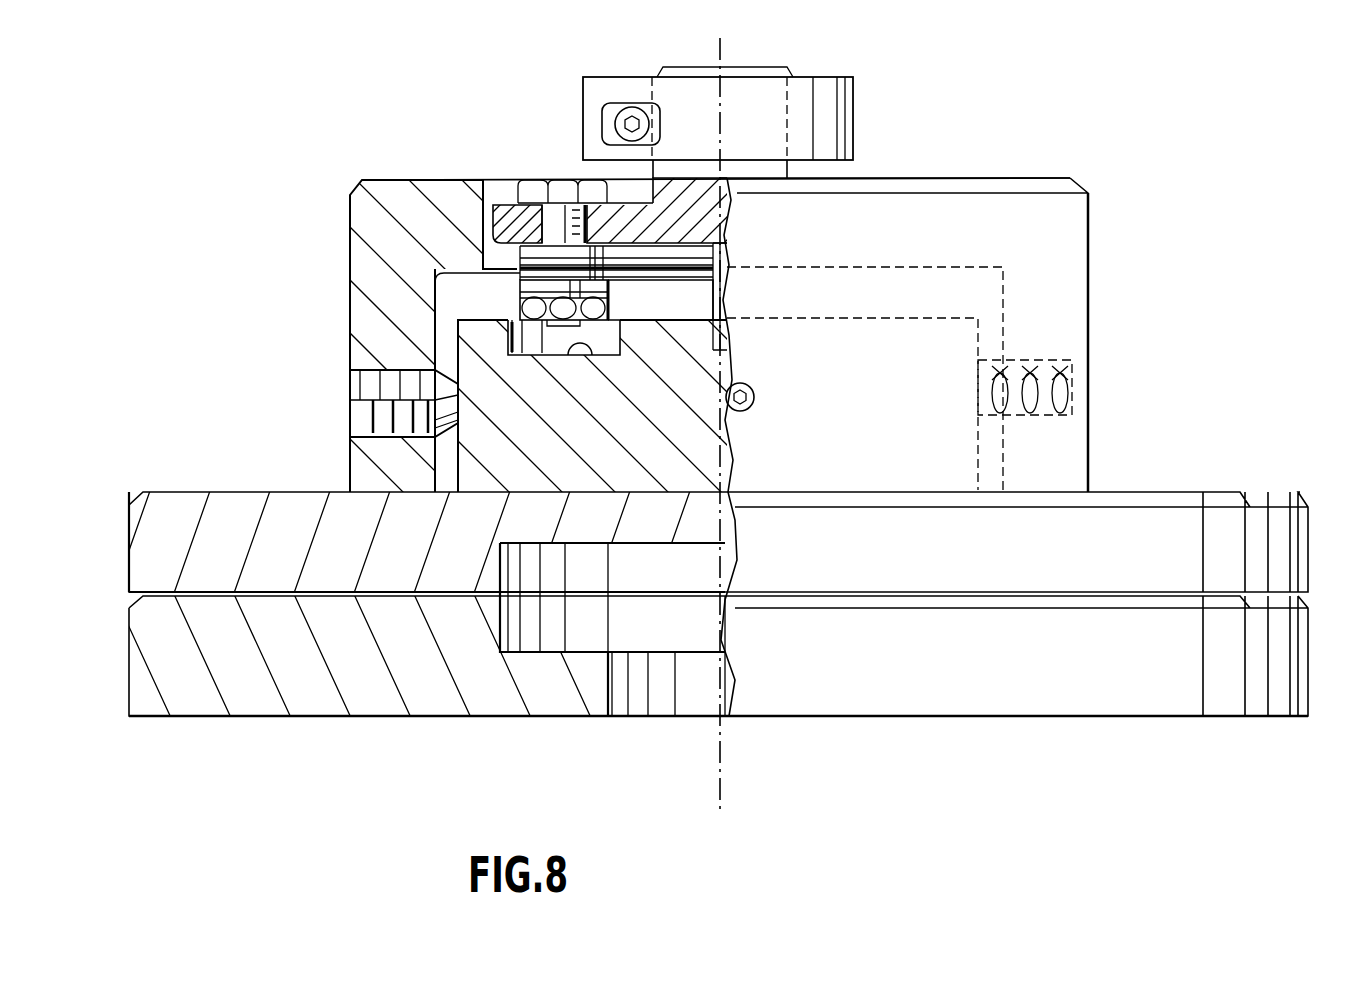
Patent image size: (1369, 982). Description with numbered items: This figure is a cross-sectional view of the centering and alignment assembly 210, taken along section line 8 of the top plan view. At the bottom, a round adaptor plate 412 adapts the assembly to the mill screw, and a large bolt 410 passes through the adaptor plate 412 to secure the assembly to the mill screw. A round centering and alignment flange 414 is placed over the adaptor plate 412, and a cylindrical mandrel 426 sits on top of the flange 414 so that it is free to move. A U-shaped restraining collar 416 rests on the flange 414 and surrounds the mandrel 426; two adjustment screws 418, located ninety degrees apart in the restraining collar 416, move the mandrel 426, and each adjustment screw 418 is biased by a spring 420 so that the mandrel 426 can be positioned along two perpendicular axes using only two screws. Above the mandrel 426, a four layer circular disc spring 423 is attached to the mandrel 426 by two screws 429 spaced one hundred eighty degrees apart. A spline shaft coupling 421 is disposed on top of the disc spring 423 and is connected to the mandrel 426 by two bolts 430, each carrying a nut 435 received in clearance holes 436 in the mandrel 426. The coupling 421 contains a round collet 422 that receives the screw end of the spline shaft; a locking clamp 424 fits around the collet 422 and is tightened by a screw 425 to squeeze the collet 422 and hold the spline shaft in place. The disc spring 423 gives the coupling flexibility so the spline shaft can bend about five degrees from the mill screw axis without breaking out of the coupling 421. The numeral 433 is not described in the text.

The centering and alignment assembly 210 is at (272, 186).
The large bolt 410 is at (713, 625).
The round adaptor plate 412 is at (320, 717).
The round centering and alignment flange 414 is at (188, 492).
The U-shaped restraining collar 416 is at (350, 252).
The adjustment screws 418 is at (350, 414).
The spring 420 is at (1072, 390).
The spline shaft coupling 421 is at (733, 213).
The round collet 422 is at (793, 172).
The four layer circular disc spring 423 is at (632, 283).
The locking clamp 424 is at (830, 83).
The screw 425 is at (630, 120).
The cylindrical mandrel 426 is at (708, 458).
The screws 429 is at (735, 297).
The bolts 430 is at (577, 212).
The shaft 433 is at (532, 255).
The nut 435 is at (525, 305).
The clearance holes 436 is at (590, 343).
The section line 8— 8 is at (714, 798).